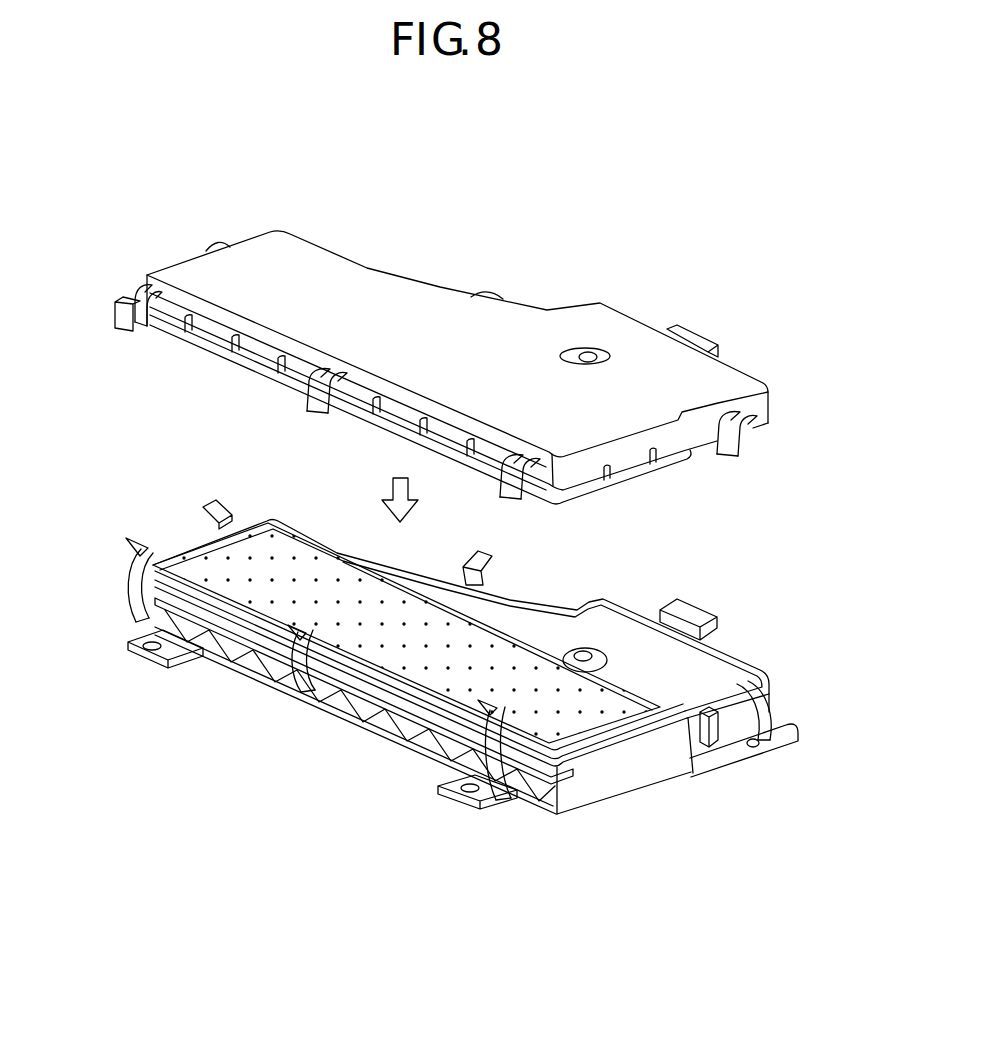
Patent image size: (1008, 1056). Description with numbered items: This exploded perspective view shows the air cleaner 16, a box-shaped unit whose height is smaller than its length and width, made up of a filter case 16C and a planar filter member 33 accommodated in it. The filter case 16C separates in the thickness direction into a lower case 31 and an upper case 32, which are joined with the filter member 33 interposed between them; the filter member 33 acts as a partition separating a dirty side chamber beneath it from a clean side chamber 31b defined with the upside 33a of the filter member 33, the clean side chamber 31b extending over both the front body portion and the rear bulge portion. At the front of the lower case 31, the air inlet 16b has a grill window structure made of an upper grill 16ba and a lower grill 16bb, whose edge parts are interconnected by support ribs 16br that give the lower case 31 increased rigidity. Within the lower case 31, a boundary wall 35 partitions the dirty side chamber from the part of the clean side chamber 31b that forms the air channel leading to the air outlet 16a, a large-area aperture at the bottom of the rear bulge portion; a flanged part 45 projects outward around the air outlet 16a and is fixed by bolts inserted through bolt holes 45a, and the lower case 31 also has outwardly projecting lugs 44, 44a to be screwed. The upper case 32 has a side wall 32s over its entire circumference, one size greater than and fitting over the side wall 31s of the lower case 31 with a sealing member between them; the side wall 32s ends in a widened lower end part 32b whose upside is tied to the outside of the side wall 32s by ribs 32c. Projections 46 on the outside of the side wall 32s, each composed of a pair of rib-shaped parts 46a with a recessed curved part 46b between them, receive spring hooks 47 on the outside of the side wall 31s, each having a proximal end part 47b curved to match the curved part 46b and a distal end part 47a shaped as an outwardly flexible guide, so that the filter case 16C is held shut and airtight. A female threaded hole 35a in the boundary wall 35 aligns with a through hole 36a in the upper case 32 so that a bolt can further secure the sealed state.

The air cleaner 16 is at (299, 183).
The filter case 16C is at (815, 513).
The upper case 32 is at (781, 440).
The lower case 31 is at (787, 680).
The projections 46 is at (760, 488).
The rib-shaped parts 46a is at (126, 284).
The curved part 46b is at (116, 318).
The ribs 32c is at (223, 337).
The widened lower end part 32b is at (655, 493).
The side wall 32s is at (707, 440).
The through hole 36a is at (587, 350).
The filter member 33 is at (289, 565).
The filter surface 33a is at (346, 592).
The boundary wall 35 is at (540, 612).
The female threaded hole 35a is at (583, 650).
The clean side chamber 31b is at (514, 643).
The air outlet 16a is at (710, 690).
The air inlet 16b is at (170, 697).
The upper grill 16ba is at (245, 670).
The lower grill 16bb is at (265, 692).
The support ribs 16br is at (380, 707).
The lugs 44 is at (137, 657).
The mounting tab 44a is at (458, 803).
The flanged part 45 is at (783, 737).
The bolt holes 45a is at (755, 750).
The spring hooks 47 is at (207, 523).
The distal end part 47a is at (507, 787).
The proximal end part 47b is at (493, 783).
The side wall 31s is at (657, 790).